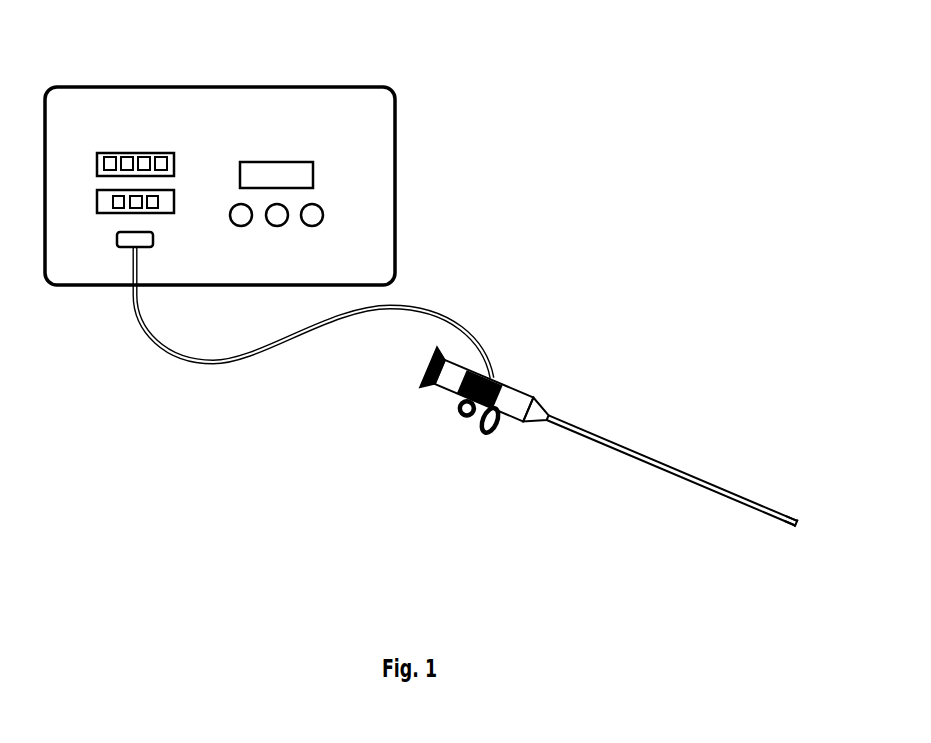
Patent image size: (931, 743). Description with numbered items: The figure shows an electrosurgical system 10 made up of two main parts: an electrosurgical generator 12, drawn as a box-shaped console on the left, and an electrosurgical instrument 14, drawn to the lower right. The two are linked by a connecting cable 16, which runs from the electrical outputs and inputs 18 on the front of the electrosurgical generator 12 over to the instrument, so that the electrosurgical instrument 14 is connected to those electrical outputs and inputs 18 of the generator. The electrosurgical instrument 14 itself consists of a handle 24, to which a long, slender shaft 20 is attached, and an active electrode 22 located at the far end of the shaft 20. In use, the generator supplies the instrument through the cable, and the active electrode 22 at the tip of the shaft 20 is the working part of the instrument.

The electrosurgical system 10 is at (609, 129).
The electrosurgical generator 12 is at (377, 162).
The electrosurgical instrument 14 is at (511, 458).
The connecting cable 16 is at (243, 360).
The electrical outputs and inputs 18 is at (123, 247).
The shaft 20 is at (630, 447).
The active electrode 22 is at (803, 523).
The handle 24 is at (533, 397).